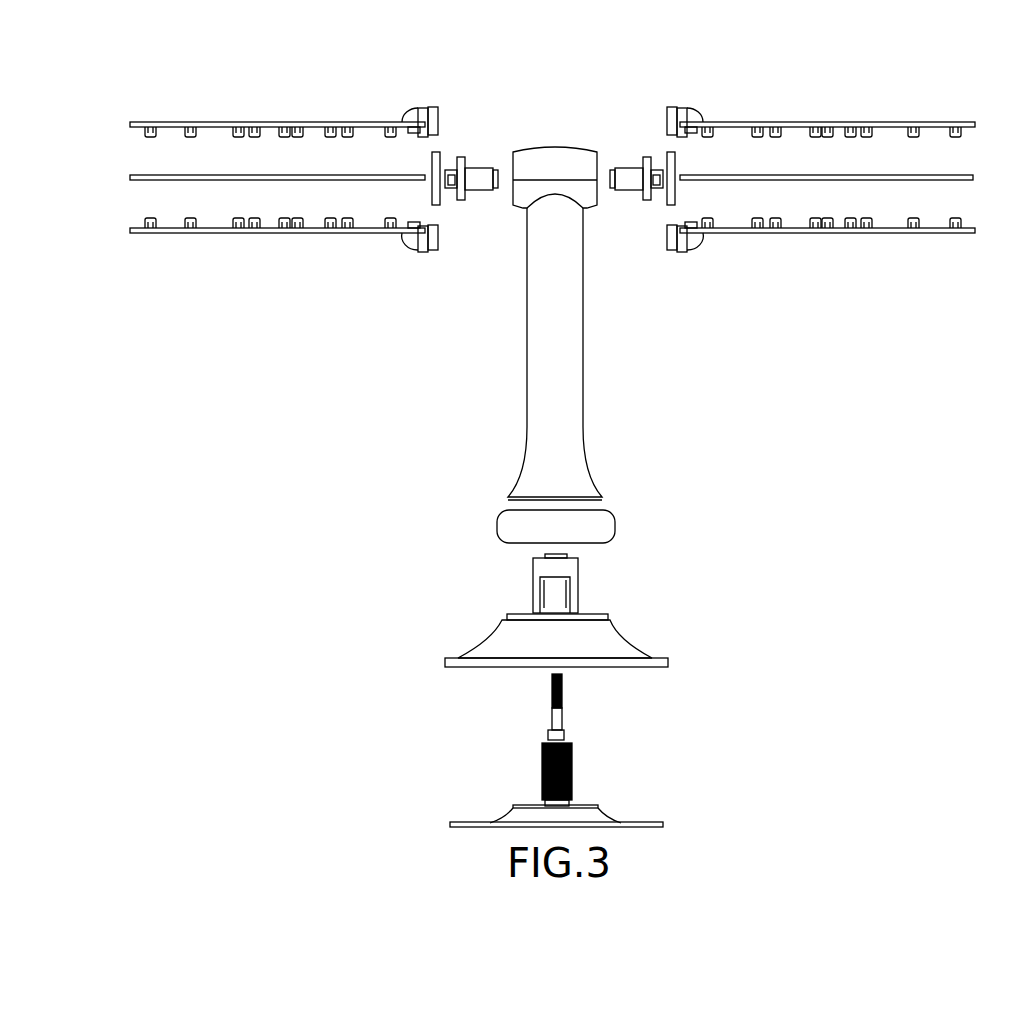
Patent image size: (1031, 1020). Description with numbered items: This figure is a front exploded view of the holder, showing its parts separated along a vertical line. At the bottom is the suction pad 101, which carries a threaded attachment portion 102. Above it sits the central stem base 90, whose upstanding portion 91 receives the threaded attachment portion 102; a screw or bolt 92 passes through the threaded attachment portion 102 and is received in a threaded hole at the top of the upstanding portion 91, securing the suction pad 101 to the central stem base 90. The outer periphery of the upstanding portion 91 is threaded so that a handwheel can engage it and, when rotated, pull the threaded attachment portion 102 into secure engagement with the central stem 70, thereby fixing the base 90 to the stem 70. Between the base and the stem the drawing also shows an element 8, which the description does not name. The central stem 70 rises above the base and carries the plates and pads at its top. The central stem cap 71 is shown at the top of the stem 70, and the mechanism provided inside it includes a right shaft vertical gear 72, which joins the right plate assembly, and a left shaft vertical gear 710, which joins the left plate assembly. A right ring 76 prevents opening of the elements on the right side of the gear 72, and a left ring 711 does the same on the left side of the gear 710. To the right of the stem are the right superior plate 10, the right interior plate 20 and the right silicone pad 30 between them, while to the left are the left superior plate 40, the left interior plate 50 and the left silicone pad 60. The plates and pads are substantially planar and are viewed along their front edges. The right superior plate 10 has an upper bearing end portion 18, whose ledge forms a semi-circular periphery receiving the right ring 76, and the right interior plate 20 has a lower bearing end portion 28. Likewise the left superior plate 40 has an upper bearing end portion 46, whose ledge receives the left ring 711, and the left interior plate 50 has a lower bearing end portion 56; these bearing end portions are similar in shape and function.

The right superior plate 10 is at (920, 122).
The upper bearing end portion 18 is at (697, 122).
The right interior plate 20 is at (920, 233).
The lower bearing end portion 28 is at (692, 242).
The right silicone pad 30 is at (978, 178).
The left superior plate 40 is at (187, 122).
The upper bearing end portion 46 is at (403, 122).
The left interior plate 50 is at (188, 233).
The lower bearing end portion 56 is at (413, 242).
The left silicone pad 60 is at (128, 178).
The central stem 70 is at (575, 347).
The central stem cap 71 is at (553, 148).
The right shaft vertical gear 72 is at (628, 182).
The right ring 76 is at (666, 152).
The left shaft vertical gear 710 is at (477, 182).
The left ring 711 is at (440, 152).
The cushion pad 8 is at (607, 525).
The central stem base 90 is at (480, 648).
The upstanding portion 91 is at (533, 570).
The screw or bolt 92 is at (548, 714).
The suction pad 101 is at (503, 815).
The threaded attachment portion 102 is at (540, 770).